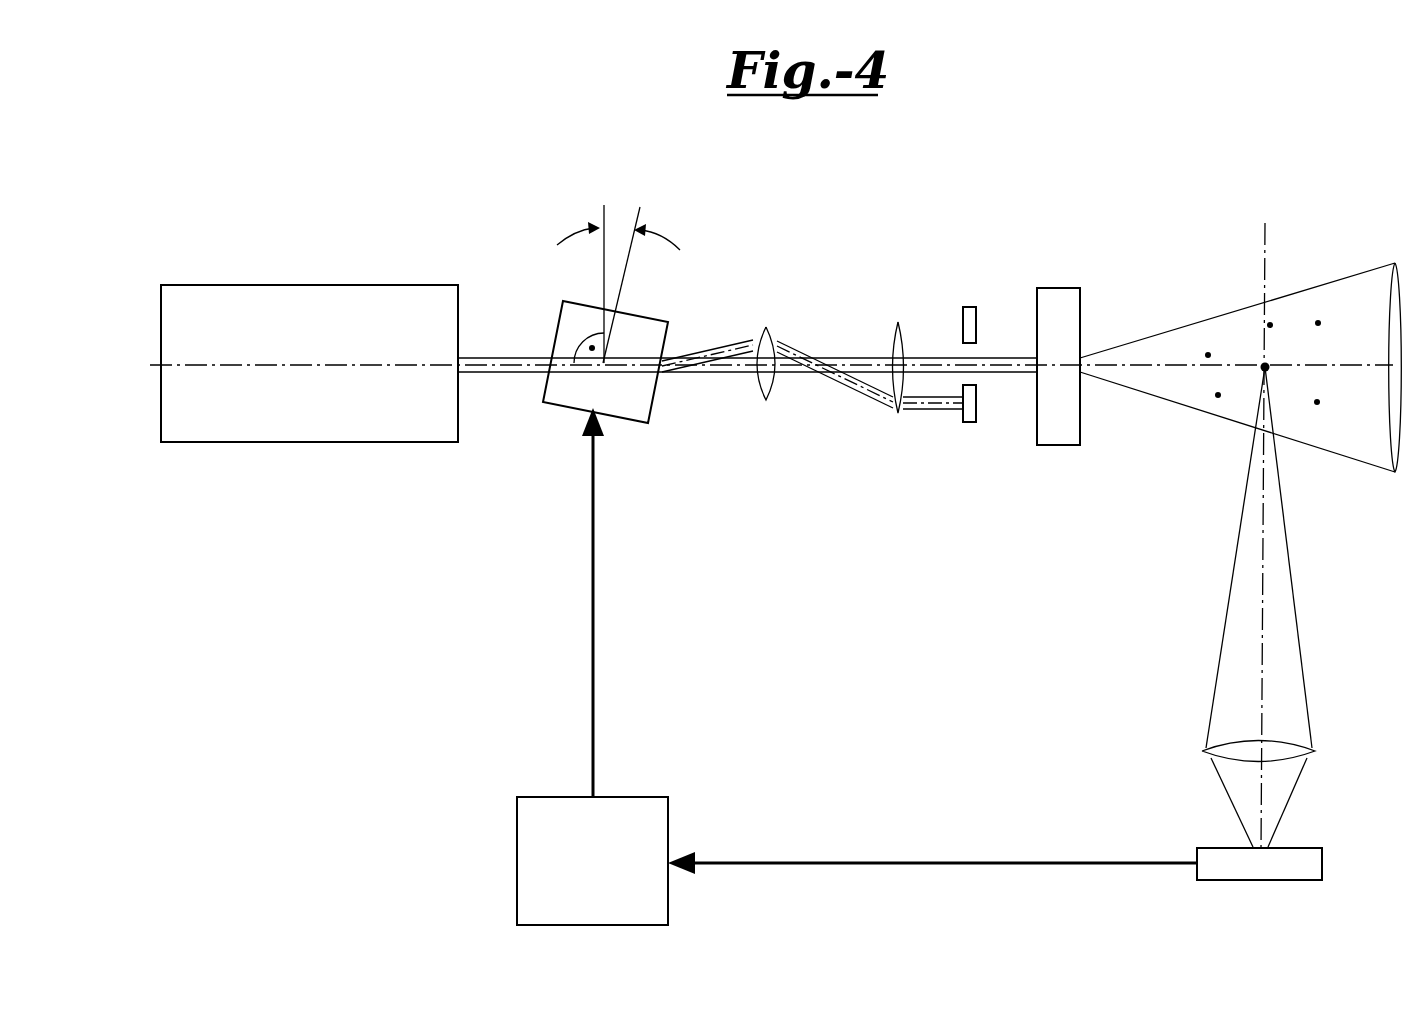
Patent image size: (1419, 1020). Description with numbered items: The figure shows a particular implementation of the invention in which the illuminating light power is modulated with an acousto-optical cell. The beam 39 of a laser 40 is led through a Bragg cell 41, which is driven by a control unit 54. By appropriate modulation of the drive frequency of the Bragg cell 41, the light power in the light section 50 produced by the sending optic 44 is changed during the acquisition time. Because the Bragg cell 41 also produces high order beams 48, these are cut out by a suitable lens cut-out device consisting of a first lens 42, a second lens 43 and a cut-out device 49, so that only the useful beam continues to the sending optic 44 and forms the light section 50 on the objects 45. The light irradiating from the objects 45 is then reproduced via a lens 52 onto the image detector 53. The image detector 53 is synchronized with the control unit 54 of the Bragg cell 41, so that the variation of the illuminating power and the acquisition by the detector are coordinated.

The beam 39 is at (508, 372).
The laser 40 is at (318, 285).
The Bragg cell 41 is at (558, 323).
The lens 42 is at (766, 327).
The lens 43 is at (898, 322).
The sending optic 44 is at (1052, 288).
The objects 45 is at (1265, 367).
The high order beams 48 is at (855, 392).
The cut-out device 49 is at (963, 423).
The light section 50 is at (1242, 307).
The lens 52 is at (1315, 751).
The image detector 53 is at (1305, 848).
The control unit 54 is at (517, 827).